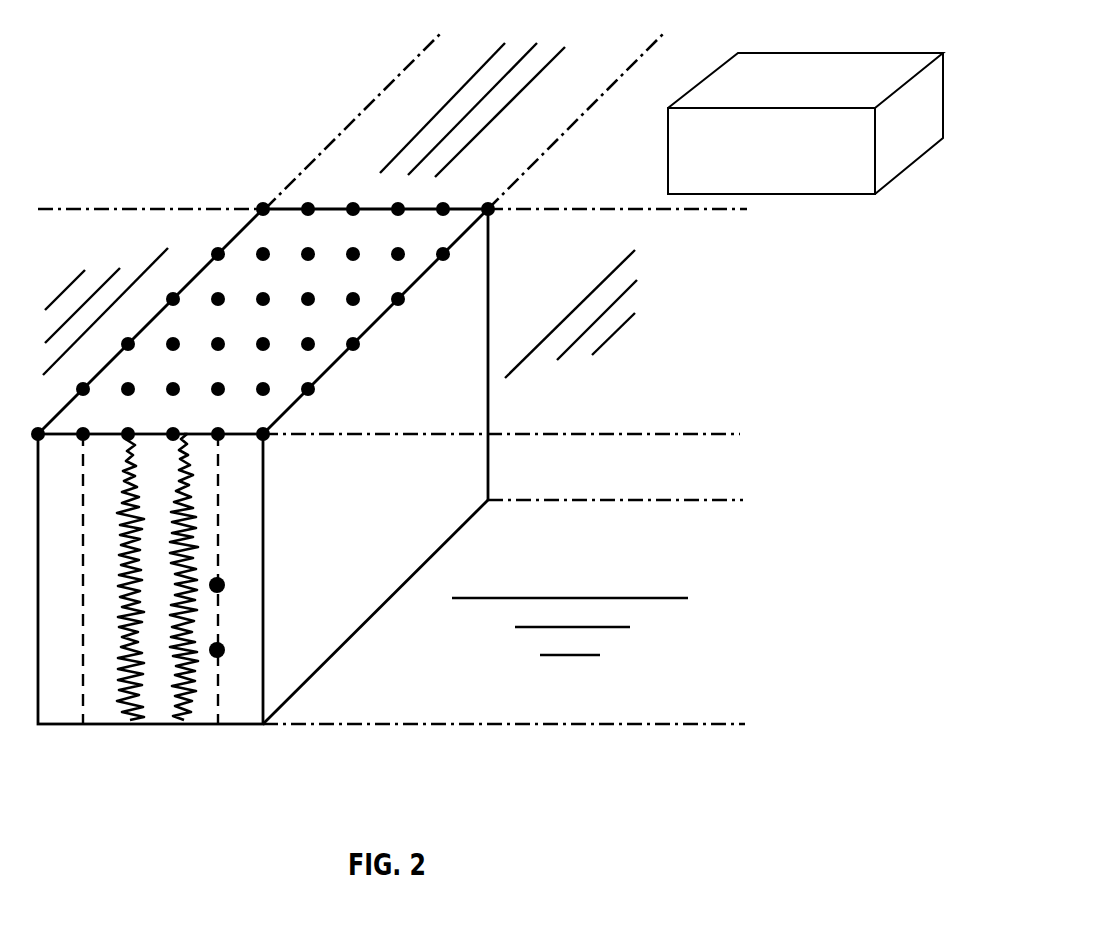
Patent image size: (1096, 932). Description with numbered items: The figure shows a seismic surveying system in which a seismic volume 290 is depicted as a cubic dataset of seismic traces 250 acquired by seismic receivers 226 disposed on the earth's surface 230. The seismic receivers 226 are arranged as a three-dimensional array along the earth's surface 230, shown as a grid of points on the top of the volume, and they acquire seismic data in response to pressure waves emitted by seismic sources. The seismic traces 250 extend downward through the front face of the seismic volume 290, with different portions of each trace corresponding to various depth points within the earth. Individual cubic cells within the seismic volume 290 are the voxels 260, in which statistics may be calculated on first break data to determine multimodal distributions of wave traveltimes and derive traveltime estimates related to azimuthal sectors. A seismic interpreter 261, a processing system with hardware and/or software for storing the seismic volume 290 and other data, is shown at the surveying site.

The seismic receivers 226 is at (263, 265).
The earth's surface 230 is at (700, 406).
The seismic volume 290 is at (372, 555).
The voxels 260 is at (336, 640).
The seismic traces 250 is at (162, 646).
The seismic interpreter 261 is at (805, 123).